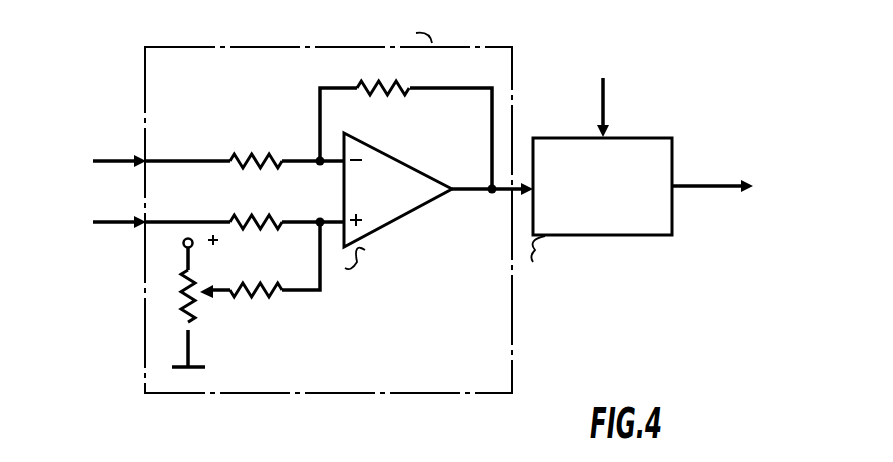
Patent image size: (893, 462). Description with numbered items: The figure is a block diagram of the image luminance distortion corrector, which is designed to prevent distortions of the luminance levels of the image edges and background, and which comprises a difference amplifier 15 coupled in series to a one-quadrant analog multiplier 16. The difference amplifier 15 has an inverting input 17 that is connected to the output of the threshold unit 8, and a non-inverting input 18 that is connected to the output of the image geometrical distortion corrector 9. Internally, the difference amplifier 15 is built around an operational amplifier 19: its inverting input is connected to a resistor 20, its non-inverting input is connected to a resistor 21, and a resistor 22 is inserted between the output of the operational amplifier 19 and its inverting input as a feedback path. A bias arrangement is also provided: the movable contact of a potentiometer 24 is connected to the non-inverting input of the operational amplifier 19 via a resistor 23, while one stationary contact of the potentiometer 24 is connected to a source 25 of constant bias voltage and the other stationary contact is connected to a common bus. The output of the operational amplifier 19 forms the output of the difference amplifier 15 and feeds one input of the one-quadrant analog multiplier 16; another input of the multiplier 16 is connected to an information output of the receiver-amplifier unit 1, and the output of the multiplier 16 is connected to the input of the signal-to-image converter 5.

The receiver-amplifier unit 1 is at (606, 86).
The signal-to-image converter 5 is at (734, 186).
The threshold unit 8 is at (93, 161).
The image geometrical distortion corrector 9 is at (93, 222).
The difference amplifier 15 is at (517, 82).
The one-quadrant analog multiplier 16 is at (631, 222).
The inverting input 17 is at (144, 158).
The non-inverting input 18 is at (144, 220).
The operational amplifier 19 is at (411, 211).
The resistor 20 is at (268, 140).
The resistor 21 is at (244, 214).
The resistor 22 is at (404, 94).
The resistor 23 is at (250, 302).
The potentiometer 24 is at (182, 299).
The source of constant bias voltage 25 is at (182, 244).